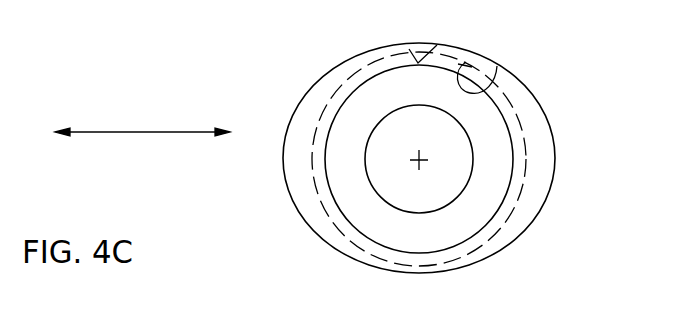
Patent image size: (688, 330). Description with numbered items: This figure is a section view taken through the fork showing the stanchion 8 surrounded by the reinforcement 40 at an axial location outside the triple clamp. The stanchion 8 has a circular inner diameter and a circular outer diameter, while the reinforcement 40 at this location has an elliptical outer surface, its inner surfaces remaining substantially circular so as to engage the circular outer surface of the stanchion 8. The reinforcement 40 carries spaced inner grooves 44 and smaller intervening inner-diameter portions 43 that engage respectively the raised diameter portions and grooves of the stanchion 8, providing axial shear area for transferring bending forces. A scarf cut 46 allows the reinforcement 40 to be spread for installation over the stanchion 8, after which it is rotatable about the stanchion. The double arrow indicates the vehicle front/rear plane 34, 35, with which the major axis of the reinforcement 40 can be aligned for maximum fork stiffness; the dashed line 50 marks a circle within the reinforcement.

The stanchion 8 is at (503, 155).
The vehicle front/rear plane 34 is at (142, 103).
The vehicle front/rear plane 35 is at (137, 132).
The reinforcement 40 is at (540, 194).
The intervening ID portion 43 is at (345, 113).
The inner groove 44 is at (497, 66).
The scarf cut 46 is at (413, 53).
The seal line 50 is at (495, 253).